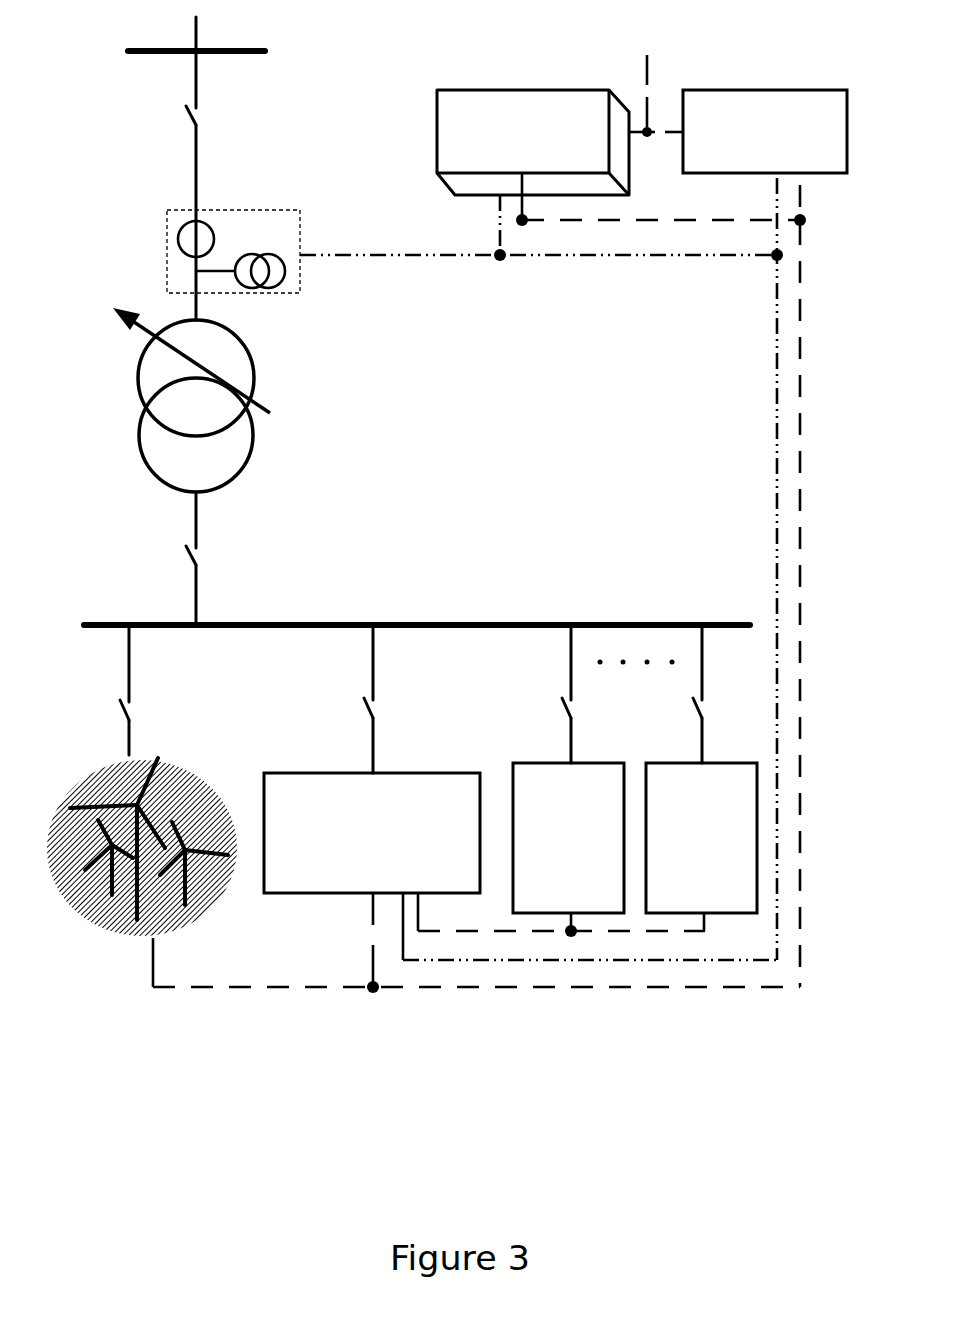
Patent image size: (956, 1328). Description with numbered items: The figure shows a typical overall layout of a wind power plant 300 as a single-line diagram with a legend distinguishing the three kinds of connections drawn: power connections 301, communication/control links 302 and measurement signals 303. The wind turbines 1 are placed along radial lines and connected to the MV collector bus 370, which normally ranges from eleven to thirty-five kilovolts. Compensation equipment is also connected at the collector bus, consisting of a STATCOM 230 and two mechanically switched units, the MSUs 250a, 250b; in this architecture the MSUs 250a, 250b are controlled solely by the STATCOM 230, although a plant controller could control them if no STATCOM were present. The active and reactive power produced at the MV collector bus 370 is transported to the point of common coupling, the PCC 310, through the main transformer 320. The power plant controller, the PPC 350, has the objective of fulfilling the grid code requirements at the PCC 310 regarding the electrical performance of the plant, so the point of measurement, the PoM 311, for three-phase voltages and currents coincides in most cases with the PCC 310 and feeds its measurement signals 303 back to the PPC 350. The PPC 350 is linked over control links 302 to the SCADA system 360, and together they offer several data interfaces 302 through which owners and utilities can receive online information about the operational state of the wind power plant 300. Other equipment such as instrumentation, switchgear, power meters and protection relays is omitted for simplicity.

The wind turbines 1 is at (142, 838).
The STATCOM 230 is at (372, 833).
The MSU 250a is at (568, 838).
The MSU 250b is at (701, 838).
The power system 300 is at (195, 1098).
The power connection 301 is at (825, 1070).
The communication/control links 302 is at (826, 1105).
The measurement signals 303 is at (810, 1140).
The PCC 310 is at (196, 31).
The Point of Measurement (PoM) 311 is at (233, 216).
The main transformer 320 is at (260, 400).
The PPC 350 is at (533, 142).
The SCADA system 360 is at (691, 93).
The MV collector bus 370 is at (417, 627).